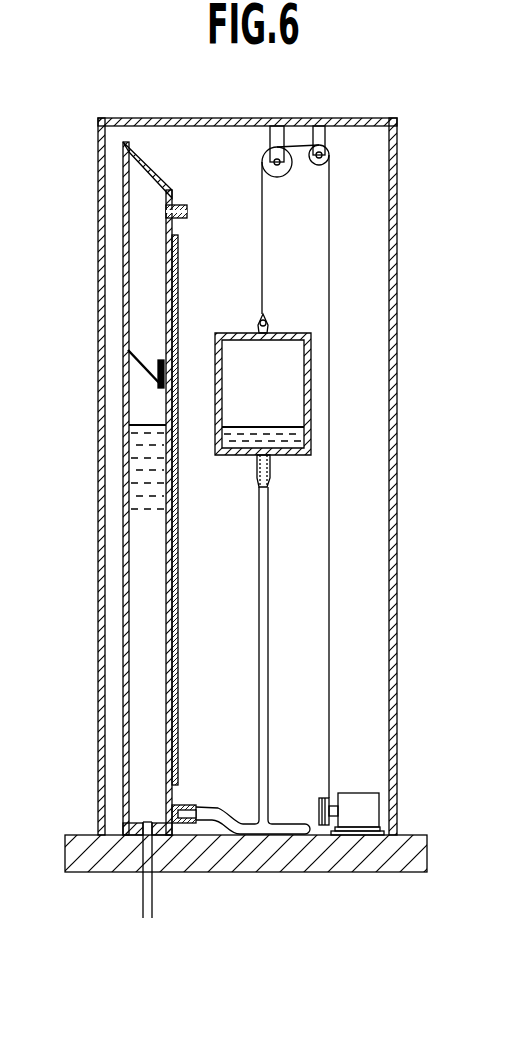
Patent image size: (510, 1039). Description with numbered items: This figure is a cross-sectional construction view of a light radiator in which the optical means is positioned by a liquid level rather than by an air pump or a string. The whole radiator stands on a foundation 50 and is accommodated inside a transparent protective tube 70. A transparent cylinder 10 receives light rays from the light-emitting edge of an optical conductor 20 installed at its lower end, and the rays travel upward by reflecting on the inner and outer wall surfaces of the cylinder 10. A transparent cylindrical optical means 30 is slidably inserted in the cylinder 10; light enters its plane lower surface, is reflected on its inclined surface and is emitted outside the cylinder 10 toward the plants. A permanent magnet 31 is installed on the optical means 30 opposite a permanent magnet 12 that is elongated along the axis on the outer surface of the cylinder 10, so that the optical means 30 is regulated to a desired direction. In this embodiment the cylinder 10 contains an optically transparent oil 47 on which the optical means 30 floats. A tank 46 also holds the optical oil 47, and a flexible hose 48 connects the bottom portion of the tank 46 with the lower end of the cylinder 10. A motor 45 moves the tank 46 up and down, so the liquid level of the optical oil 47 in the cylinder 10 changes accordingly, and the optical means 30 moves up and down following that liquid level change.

The transparent protective tube 70 is at (397, 303).
The foundation 50 is at (350, 872).
The optical means 30 is at (130, 380).
The permanent magnet 31 is at (160, 370).
The permanent magnet 12 is at (178, 273).
The transparent cylinder 10 is at (128, 458).
The optically transparent oil 47 is at (135, 518).
The optical conductor 20 is at (152, 895).
The tank 46 is at (215, 376).
The flexible hose 48 is at (268, 650).
The motor 45 is at (360, 793).